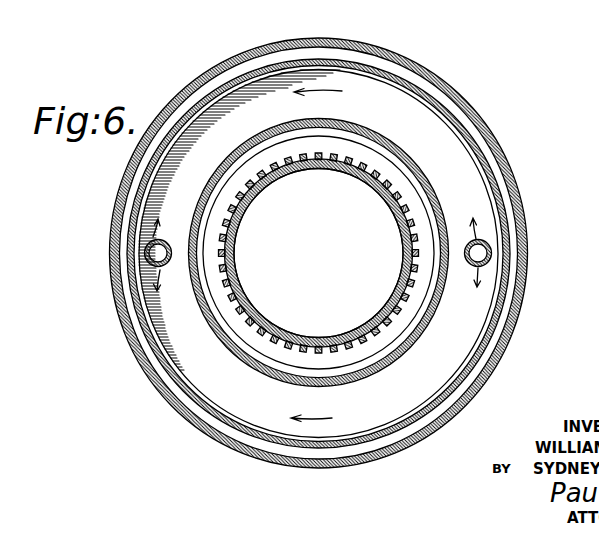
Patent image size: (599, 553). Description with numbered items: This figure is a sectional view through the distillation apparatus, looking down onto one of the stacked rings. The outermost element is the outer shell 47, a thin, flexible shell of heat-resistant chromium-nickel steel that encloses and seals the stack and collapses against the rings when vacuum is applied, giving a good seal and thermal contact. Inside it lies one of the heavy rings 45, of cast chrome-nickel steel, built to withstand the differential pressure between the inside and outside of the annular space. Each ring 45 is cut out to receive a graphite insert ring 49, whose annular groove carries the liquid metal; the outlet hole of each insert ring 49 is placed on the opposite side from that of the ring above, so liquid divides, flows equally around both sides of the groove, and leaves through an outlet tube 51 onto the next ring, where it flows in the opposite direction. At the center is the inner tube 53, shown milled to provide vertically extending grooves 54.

The rings 45 is at (503, 320).
The outer shell 47 is at (487, 132).
The graphite insert ring 49 is at (225, 110).
The outlet tube 51 is at (145, 254).
The inner tube 53 is at (404, 246).
The grooves 54 is at (404, 298).